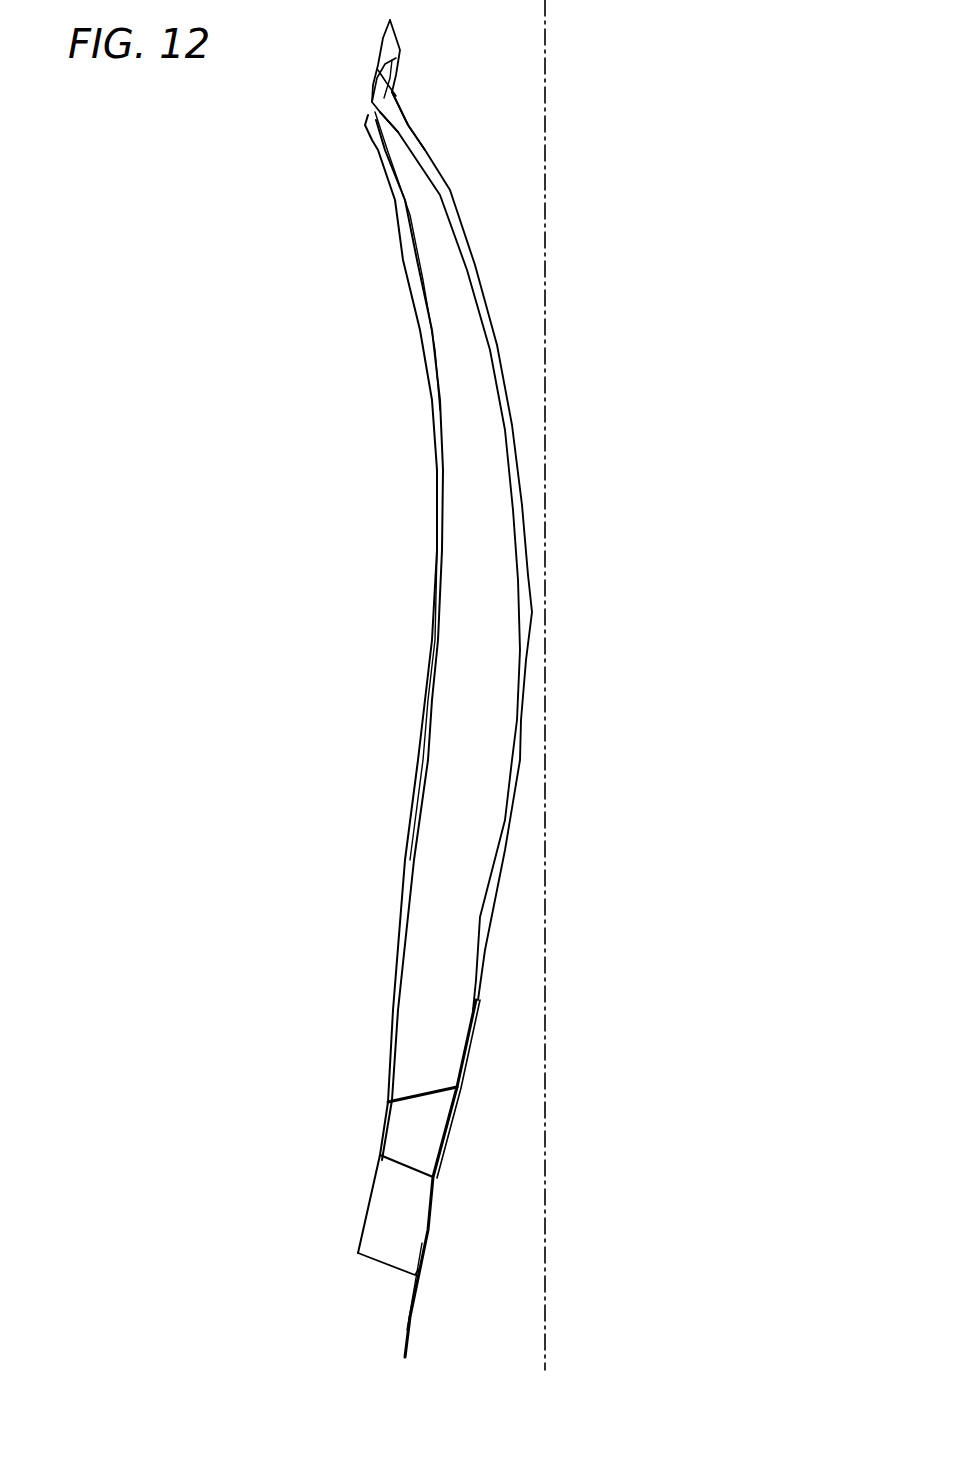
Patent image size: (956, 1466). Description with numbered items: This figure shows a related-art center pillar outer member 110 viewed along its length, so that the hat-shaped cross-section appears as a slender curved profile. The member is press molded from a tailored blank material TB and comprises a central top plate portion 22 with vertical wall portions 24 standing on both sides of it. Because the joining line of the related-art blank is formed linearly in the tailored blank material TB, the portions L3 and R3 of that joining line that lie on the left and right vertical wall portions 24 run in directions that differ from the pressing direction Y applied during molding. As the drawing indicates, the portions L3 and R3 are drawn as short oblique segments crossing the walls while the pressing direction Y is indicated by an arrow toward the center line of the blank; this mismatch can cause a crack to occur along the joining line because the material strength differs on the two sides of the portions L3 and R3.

The center pillar outer member 110 is at (457, 515).
The top plate portion 22 is at (491, 688).
The vertical wall portions 24 is at (405, 682).
The tailored blank material TB is at (605, 685).
The pressing direction Y is at (615, 681).
The portion of the joining line on the left vertical wall portion L3 is at (375, 1066).
The portion of the joining line on the right vertical wall portion R3 is at (359, 1174).